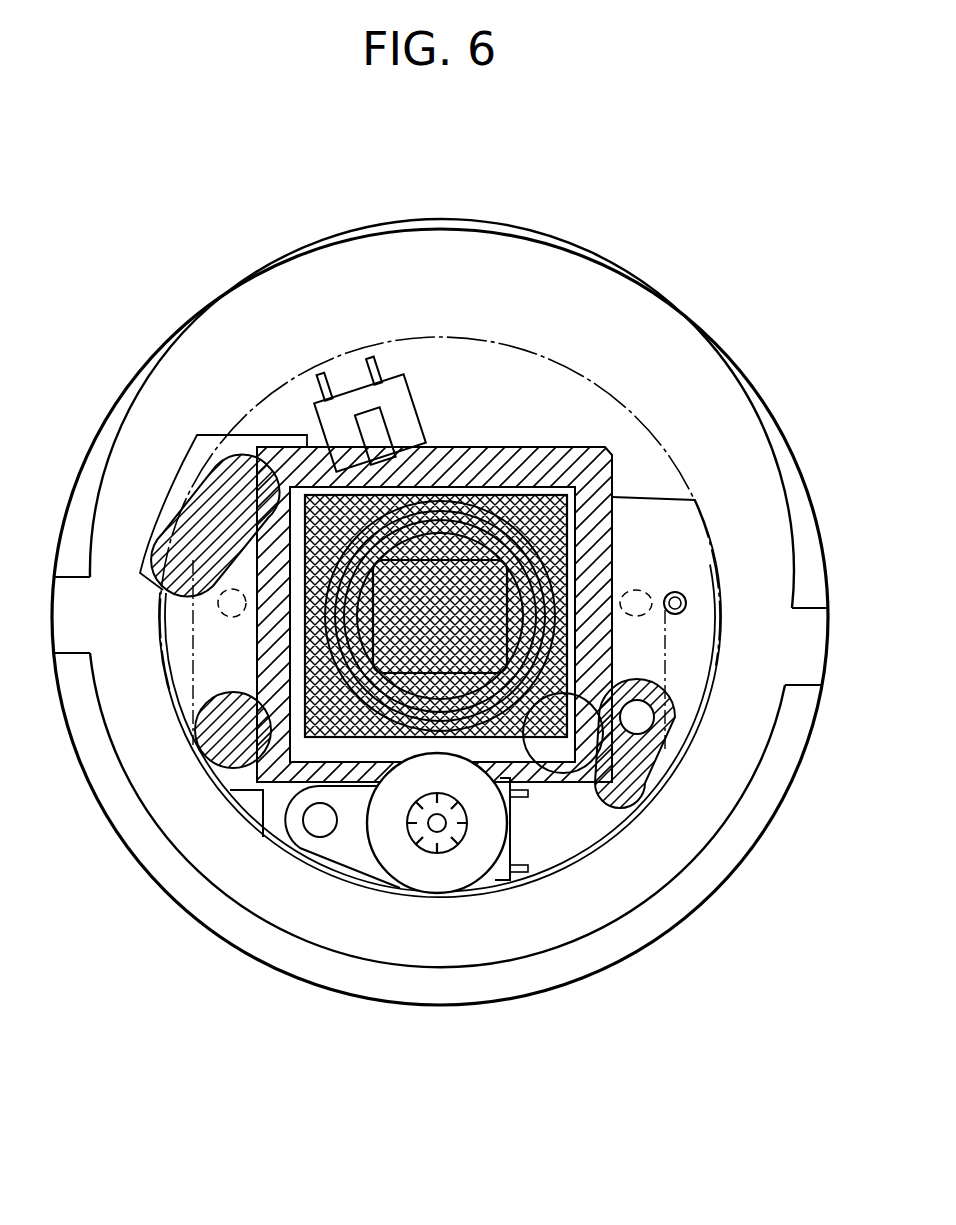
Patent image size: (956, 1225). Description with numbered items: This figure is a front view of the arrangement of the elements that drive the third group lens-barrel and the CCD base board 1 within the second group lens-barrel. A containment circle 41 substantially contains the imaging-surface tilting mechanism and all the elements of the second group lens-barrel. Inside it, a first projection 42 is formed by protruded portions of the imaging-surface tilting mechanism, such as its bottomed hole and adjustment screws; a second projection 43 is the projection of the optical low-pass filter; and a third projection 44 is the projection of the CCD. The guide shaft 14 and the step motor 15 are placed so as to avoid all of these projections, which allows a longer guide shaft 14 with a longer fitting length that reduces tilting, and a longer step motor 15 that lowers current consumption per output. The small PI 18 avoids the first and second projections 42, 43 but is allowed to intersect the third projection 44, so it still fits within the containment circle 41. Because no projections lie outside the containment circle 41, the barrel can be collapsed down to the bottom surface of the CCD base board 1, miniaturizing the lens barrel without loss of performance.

The CCD base board 1 is at (520, 236).
The guide shaft 14 is at (686, 604).
The step motor 15 is at (460, 892).
The PI 18 is at (352, 395).
The containment circle 41 is at (672, 460).
The first projection 42 is at (207, 467).
The second projection 43 is at (565, 540).
The third projection 44 is at (590, 455).